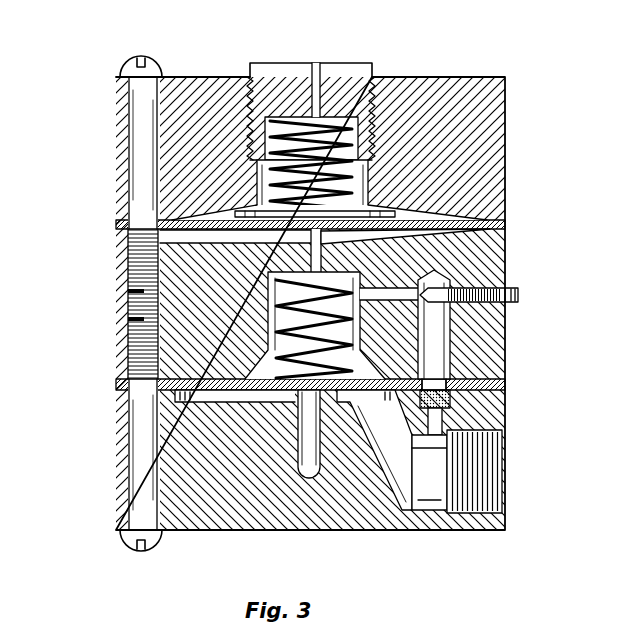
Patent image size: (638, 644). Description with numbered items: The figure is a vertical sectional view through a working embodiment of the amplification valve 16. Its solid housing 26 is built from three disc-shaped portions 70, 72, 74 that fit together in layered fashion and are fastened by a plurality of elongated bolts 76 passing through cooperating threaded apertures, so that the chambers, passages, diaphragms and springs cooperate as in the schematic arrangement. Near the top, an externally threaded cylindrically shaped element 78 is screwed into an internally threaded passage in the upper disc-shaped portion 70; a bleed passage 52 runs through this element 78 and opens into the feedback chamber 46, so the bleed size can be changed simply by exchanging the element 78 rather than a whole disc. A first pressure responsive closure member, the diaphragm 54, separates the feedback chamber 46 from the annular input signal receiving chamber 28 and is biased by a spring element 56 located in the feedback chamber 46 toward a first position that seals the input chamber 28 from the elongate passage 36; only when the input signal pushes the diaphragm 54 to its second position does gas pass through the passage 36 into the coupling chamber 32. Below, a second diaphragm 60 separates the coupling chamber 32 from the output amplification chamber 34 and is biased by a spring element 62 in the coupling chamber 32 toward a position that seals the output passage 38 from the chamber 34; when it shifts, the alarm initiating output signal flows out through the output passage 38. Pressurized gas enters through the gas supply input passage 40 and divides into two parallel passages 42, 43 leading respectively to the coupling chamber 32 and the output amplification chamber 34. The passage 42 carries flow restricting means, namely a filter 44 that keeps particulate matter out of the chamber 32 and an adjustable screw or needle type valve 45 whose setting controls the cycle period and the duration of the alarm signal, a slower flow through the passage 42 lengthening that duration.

The amplification valve 16 is at (90, 48).
The housing 26 is at (430, 74).
The input signal receiving chamber 28 is at (222, 238).
The coupling chamber 32 is at (270, 325).
The output amplification chamber 34 is at (260, 407).
The elongate passage 36 is at (298, 255).
The output passage 38 is at (296, 470).
The gas supply input passage 40 is at (432, 497).
The passage 42 is at (443, 330).
The passage 43 is at (383, 440).
The filter 44 is at (462, 438).
The adjustable screw or needle type valve 45 is at (519, 297).
The feedback chamber 46 is at (404, 213).
The bleed passage 52 is at (318, 66).
The first movable pressure responsive closure member 54 is at (508, 225).
The spring element 56 is at (353, 178).
The second pressure responsive movable closure member 60 is at (508, 386).
The spring element 62 is at (345, 297).
The disc-shaped portion 70 is at (488, 118).
The disc-shaped portion 72 is at (492, 272).
The disc-shaped portion 74 is at (492, 417).
The elongated bolt 76 is at (140, 116).
The cylindrically shaped element 78 is at (350, 66).